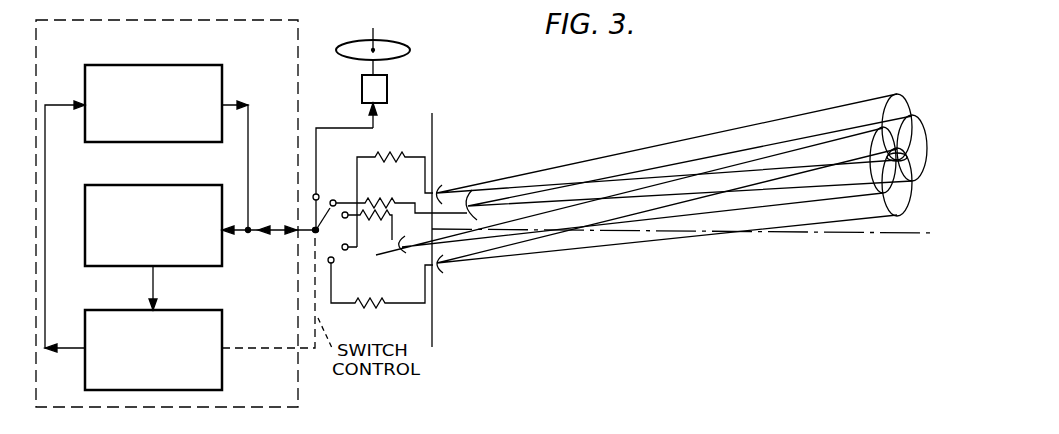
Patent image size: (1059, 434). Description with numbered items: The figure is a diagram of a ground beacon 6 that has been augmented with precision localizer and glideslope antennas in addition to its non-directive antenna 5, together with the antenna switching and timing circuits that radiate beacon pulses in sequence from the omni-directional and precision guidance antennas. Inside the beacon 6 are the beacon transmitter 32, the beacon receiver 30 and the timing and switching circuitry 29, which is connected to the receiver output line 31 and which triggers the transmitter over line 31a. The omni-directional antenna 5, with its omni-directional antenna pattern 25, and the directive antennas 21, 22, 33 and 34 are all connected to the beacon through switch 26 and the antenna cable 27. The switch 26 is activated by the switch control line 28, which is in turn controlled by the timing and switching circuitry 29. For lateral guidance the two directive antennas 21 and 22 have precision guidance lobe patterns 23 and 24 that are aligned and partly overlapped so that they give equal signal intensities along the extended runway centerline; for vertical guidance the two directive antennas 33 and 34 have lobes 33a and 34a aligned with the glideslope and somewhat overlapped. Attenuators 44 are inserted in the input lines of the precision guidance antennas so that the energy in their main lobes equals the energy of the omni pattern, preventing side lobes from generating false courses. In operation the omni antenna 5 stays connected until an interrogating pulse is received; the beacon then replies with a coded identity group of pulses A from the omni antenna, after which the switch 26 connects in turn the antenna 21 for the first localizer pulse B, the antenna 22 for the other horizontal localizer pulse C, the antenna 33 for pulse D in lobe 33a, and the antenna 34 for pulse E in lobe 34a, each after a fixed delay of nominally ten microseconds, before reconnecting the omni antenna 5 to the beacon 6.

The beacon 6 is at (298, 390).
The beacon transmitter 32 is at (183, 65).
The beacon receiver 30 is at (183, 185).
The timing and switching circuitry 29 is at (197, 310).
The line 31a is at (45, 190).
The output line 31 is at (150, 283).
The antenna cable 27 is at (276, 228).
The switch control line 28 is at (243, 352).
The omni-directional antenna pattern 25 is at (393, 37).
The non-directive antenna 5 is at (376, 45).
The switch 26 is at (320, 194).
The attenuators 44 is at (400, 162).
The directive antenna 34 is at (437, 190).
The directive antenna 22 is at (465, 205).
The directive antenna 21 is at (398, 254).
The directive antenna 33 is at (437, 268).
The precision guidance lobe 34a is at (787, 115).
The precision guidance antenna lobe pattern 24 is at (672, 165).
The precision guidance lobe 33a is at (593, 250).
The precision guidance antenna lobe pattern 23 is at (768, 208).
The coded group of pulses A is at (346, 43).
The first localizer pulse B is at (870, 176).
The horizontal localizer pulse C is at (926, 149).
The pulse D is at (908, 194).
The pulse E is at (900, 95).